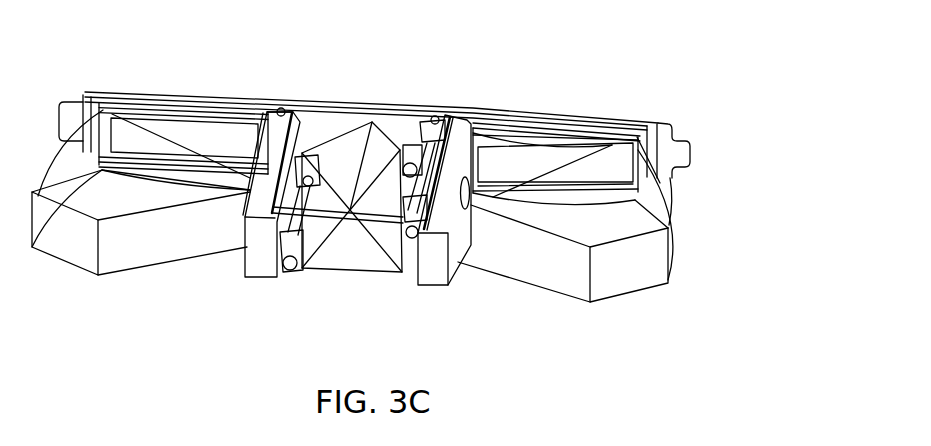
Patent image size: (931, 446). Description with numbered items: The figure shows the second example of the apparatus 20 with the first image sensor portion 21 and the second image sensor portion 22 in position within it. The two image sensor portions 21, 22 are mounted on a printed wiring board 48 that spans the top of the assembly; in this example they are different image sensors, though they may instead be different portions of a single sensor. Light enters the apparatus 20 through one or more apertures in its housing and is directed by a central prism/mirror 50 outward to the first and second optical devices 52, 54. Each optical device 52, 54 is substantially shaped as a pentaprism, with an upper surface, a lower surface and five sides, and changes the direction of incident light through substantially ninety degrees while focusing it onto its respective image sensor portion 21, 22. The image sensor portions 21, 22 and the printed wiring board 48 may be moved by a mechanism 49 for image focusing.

The apparatus 20 is at (421, 204).
The first image sensor portion 21 is at (633, 130).
The second image sensor portion 22 is at (118, 107).
The printed wiring board 48 is at (473, 112).
The mechanism 49 is at (313, 157).
The prism/mirror 50 is at (367, 263).
The first optical device 52 is at (128, 255).
The second optical device 54 is at (640, 306).